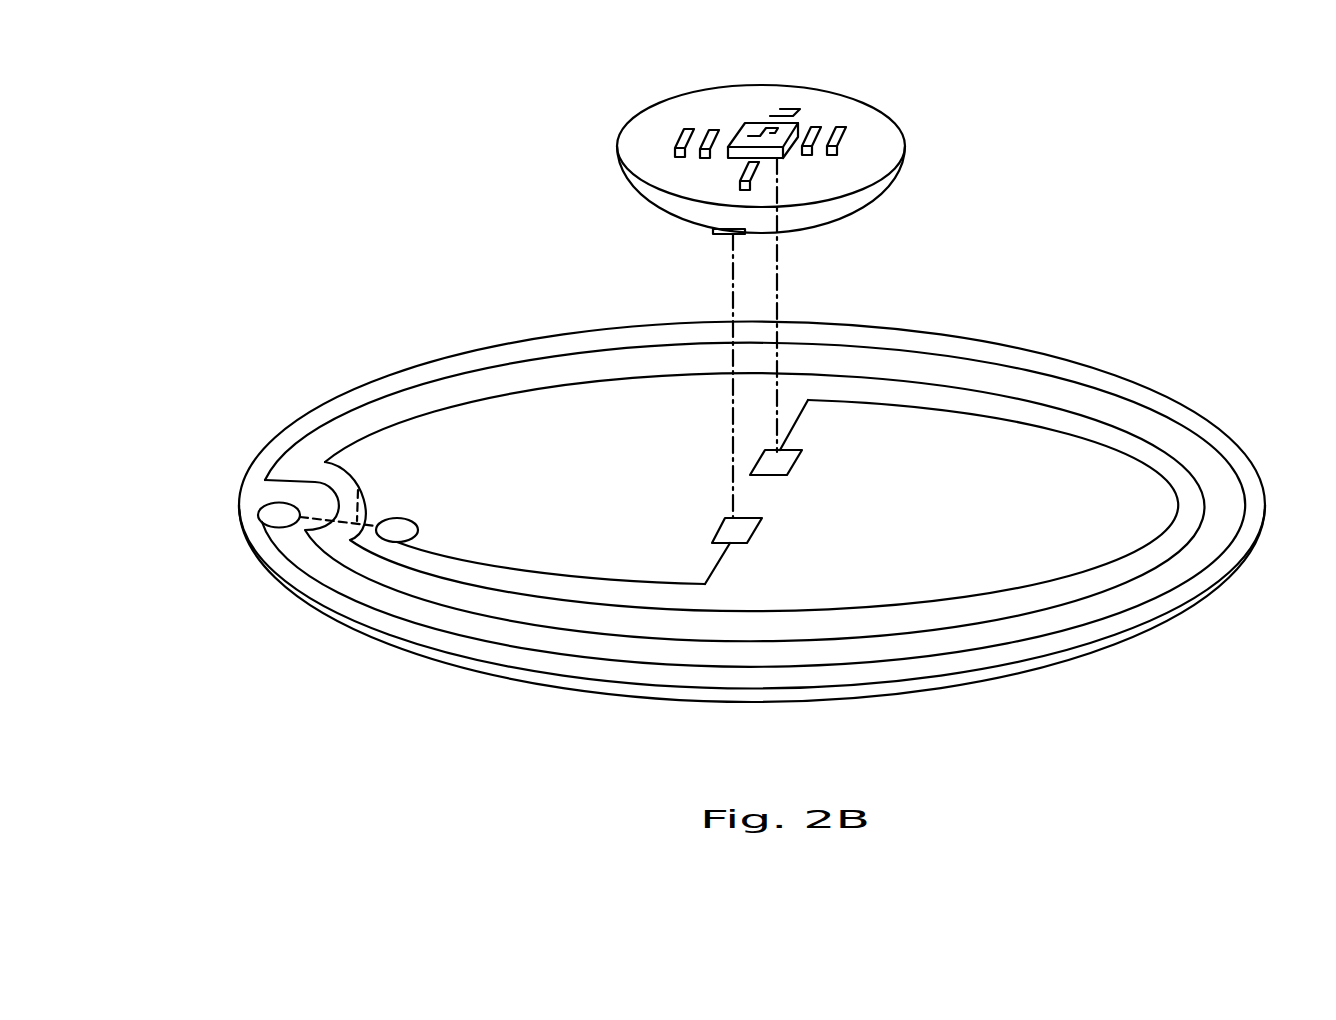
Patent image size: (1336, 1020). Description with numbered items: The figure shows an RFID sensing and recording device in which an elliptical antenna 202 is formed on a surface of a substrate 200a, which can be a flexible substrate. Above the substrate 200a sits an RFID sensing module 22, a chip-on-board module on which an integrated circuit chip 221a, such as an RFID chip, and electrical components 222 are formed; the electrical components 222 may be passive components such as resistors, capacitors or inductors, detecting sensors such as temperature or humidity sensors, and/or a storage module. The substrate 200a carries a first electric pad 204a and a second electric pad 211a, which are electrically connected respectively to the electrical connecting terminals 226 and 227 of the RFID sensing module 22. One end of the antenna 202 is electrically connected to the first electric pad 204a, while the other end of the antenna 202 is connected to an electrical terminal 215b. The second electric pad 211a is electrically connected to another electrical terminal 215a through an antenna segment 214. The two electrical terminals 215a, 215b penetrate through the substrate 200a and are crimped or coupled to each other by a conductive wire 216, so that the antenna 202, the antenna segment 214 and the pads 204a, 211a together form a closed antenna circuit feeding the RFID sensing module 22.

The RFID sensing module 22 is at (897, 118).
The electrical components 222 is at (689, 127).
The integrated circuit chip 221a is at (770, 122).
The electrical connecting terminal 226 is at (784, 106).
The electrical connecting terminal 227 is at (724, 233).
The antenna 202 is at (1068, 378).
The conductive wire 216 is at (366, 482).
The electrical terminal 215b is at (272, 512).
The electrical terminal 215a is at (398, 530).
The antenna segment 214 is at (502, 563).
The first electric pad 204a is at (785, 462).
The second electric pad 211a is at (735, 530).
The substrate 200a is at (1215, 592).